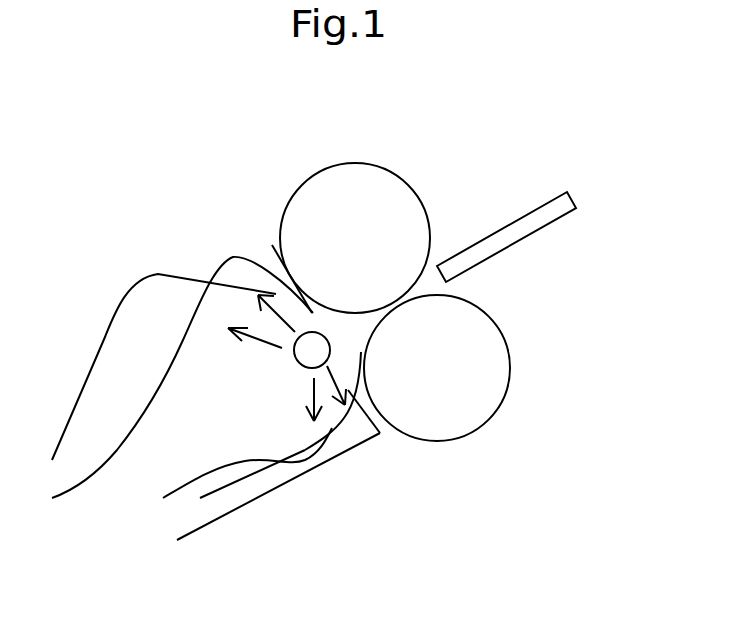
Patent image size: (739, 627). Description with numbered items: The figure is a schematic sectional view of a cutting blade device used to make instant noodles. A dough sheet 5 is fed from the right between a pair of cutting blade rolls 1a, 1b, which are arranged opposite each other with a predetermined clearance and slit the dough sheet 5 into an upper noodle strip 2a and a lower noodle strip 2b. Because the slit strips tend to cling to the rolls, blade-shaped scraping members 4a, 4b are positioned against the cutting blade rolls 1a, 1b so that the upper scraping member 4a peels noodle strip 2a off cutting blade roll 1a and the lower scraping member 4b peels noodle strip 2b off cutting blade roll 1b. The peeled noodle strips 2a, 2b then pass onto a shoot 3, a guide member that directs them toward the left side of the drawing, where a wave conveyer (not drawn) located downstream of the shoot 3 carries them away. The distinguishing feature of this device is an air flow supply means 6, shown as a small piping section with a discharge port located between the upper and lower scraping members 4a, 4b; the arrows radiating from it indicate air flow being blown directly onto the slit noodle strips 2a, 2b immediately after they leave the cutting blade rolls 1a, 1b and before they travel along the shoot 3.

The cutting blade roll 1a is at (406, 182).
The cutting blade roll 1b is at (510, 387).
The slit noodle strip 2a is at (213, 270).
The slit noodle strip 2b is at (333, 433).
The shoot 3 is at (227, 515).
The scraping member 4a is at (270, 257).
The scraping member 4b is at (380, 433).
The dough sheet 5 is at (540, 229).
The air flow supply means 6 is at (314, 350).